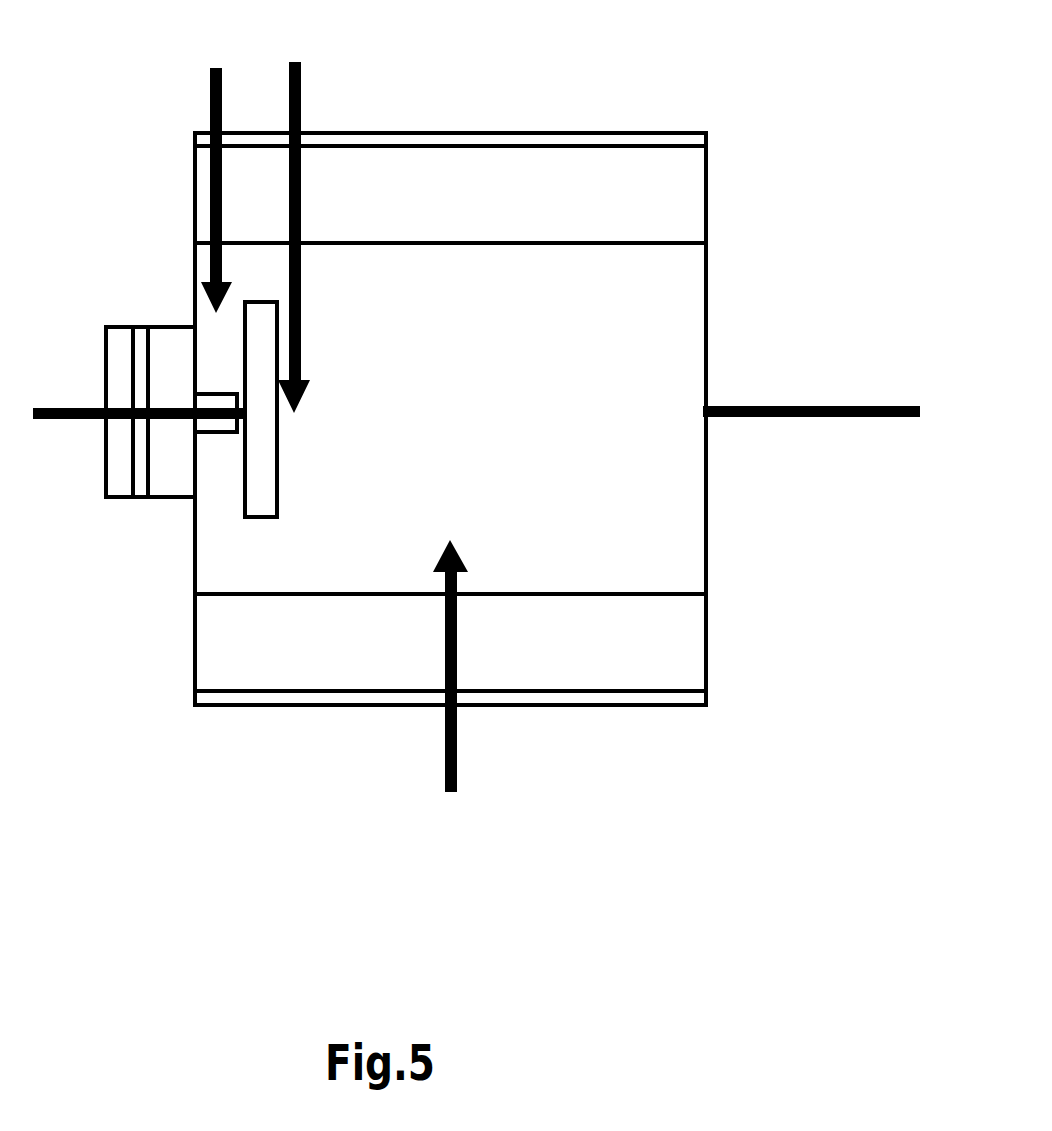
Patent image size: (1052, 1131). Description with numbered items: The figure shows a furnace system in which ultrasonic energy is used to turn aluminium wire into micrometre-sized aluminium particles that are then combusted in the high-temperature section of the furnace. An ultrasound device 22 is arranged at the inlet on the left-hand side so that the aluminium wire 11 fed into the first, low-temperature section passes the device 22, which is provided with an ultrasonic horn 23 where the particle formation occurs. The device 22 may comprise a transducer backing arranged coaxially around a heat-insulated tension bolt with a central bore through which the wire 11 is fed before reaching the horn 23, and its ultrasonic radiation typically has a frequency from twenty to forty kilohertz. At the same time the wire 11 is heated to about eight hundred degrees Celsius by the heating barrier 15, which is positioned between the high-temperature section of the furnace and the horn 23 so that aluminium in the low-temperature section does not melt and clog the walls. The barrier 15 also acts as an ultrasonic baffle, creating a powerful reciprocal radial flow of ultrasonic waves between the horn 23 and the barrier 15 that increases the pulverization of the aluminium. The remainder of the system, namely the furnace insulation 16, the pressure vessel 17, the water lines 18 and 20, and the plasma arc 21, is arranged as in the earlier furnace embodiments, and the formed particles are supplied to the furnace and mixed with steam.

The aluminium wire 11 is at (467, 444).
The heating barrier 15 is at (255, 522).
The furnace insulation 16 is at (571, 625).
The pressure vessel 17 is at (552, 708).
The water line 18 is at (450, 694).
The water line 20 is at (211, 168).
The plasma arc 21 is at (295, 217).
The ultrasound device 22 is at (112, 517).
The ultrasonic horn 23 is at (226, 473).